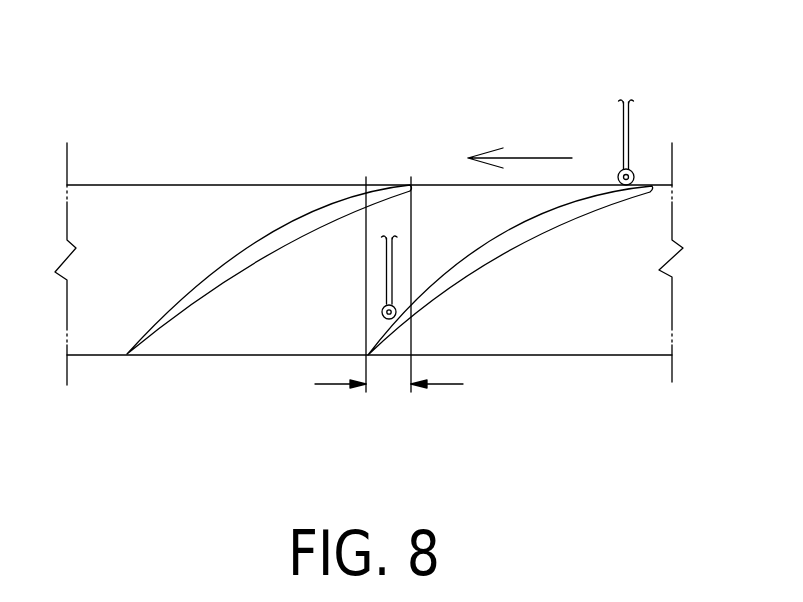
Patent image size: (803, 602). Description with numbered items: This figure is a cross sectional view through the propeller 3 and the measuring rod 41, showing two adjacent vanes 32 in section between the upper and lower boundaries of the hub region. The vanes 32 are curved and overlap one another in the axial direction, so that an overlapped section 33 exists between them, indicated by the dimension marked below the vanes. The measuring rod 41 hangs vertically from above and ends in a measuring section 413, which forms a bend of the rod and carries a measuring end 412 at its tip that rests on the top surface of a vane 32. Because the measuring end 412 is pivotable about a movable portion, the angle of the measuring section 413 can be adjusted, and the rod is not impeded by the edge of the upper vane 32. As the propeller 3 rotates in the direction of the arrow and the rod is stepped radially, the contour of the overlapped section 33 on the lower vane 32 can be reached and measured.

The propeller 3 is at (312, 174).
The vane 32 is at (543, 228).
The overlapped section 33 is at (389, 389).
The measuring rod 41 is at (608, 106).
The measuring end 412 is at (637, 170).
The measuring section 413 is at (623, 122).